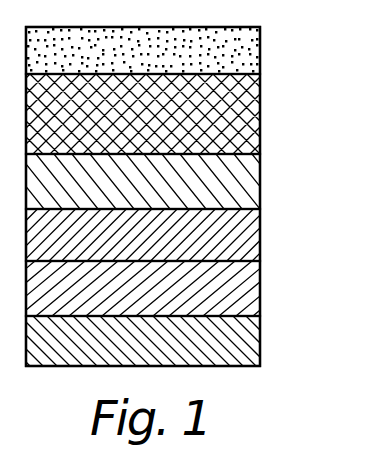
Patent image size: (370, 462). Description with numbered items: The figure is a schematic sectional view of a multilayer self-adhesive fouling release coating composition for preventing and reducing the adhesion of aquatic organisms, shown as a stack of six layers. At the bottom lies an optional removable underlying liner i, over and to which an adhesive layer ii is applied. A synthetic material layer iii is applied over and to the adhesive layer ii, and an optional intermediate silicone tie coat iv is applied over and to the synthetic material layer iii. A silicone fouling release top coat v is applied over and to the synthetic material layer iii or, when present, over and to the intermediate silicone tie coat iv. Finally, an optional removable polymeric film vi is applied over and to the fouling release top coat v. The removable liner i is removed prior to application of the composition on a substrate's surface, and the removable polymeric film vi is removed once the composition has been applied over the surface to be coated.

The removable polymeric film vi is at (250, 50).
The silicone fouling release top coat v is at (250, 116).
The intermediate silicone tie coat iv is at (250, 184).
The synthetic material layer iii is at (250, 233).
The adhesive layer ii is at (250, 289).
The removable underlying liner i is at (250, 341).